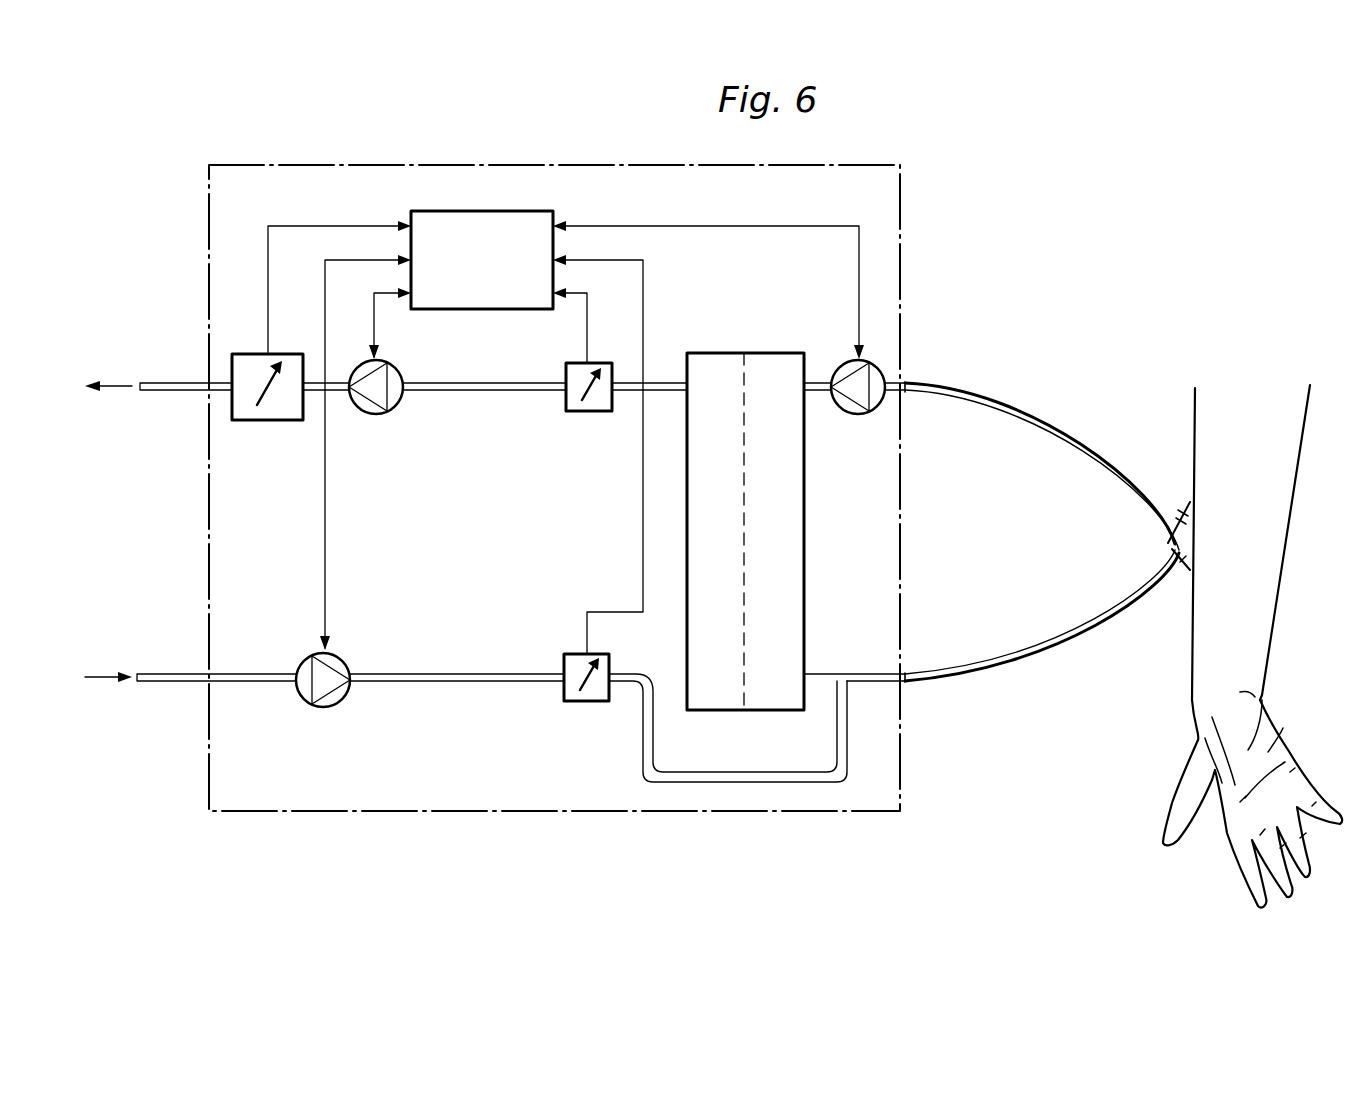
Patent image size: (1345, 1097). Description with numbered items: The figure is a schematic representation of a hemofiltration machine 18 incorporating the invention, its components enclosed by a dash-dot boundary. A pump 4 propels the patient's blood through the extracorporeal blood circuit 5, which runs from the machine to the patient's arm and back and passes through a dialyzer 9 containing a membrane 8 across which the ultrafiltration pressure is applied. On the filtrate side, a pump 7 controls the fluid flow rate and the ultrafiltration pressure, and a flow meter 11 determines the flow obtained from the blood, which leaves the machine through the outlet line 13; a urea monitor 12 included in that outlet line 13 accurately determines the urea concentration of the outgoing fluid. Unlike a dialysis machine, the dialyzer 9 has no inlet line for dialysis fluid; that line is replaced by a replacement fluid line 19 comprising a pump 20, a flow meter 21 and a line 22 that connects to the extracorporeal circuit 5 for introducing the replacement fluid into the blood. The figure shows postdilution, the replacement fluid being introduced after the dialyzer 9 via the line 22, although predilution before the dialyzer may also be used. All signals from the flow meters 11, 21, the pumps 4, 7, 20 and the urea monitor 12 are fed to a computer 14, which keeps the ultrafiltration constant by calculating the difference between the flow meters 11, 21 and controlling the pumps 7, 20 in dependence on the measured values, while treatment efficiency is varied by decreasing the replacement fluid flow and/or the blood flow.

The pump 4 is at (872, 398).
The extracorporeal blood circuit 5 is at (1141, 580).
The pump 7 is at (366, 410).
The membrane 8 is at (743, 372).
The dialyzer 9 is at (763, 363).
The flow meter 11 is at (600, 412).
The urea monitor 12 is at (286, 410).
The outlet line 13 is at (162, 383).
The computer 14 is at (538, 214).
The hemofiltration machine 18 is at (563, 163).
The replacement fluid line 19 is at (172, 681).
The pump 20 is at (334, 660).
The flow meter 21 is at (573, 668).
The line 22 is at (771, 774).